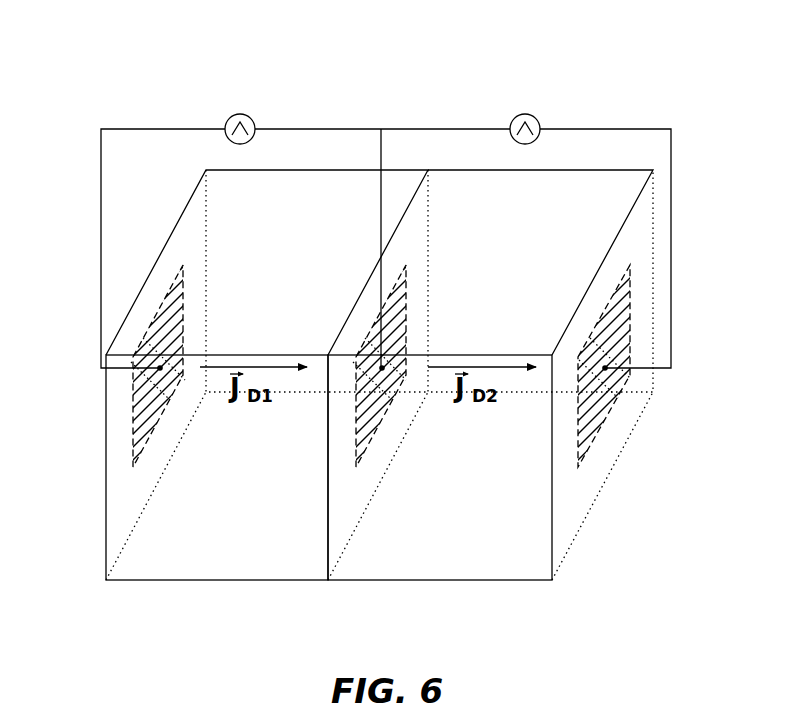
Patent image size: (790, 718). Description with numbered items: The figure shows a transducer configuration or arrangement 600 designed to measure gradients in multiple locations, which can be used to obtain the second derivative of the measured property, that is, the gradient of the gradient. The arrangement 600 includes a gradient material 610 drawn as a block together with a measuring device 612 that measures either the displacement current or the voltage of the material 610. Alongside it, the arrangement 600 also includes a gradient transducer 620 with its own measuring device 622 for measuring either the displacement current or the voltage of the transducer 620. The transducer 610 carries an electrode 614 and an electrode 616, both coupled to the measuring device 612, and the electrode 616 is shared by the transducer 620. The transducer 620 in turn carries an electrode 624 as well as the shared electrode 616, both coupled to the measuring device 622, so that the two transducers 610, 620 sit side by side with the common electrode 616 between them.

The configuration or arrangement 600 is at (148, 50).
The gradient material 610 is at (215, 600).
The gradient transducer 620 is at (445, 600).
The measuring device 612 is at (247, 115).
The measuring device 622 is at (532, 115).
The electrode 614 is at (145, 402).
The electrode 616 is at (372, 403).
The electrode 624 is at (597, 405).